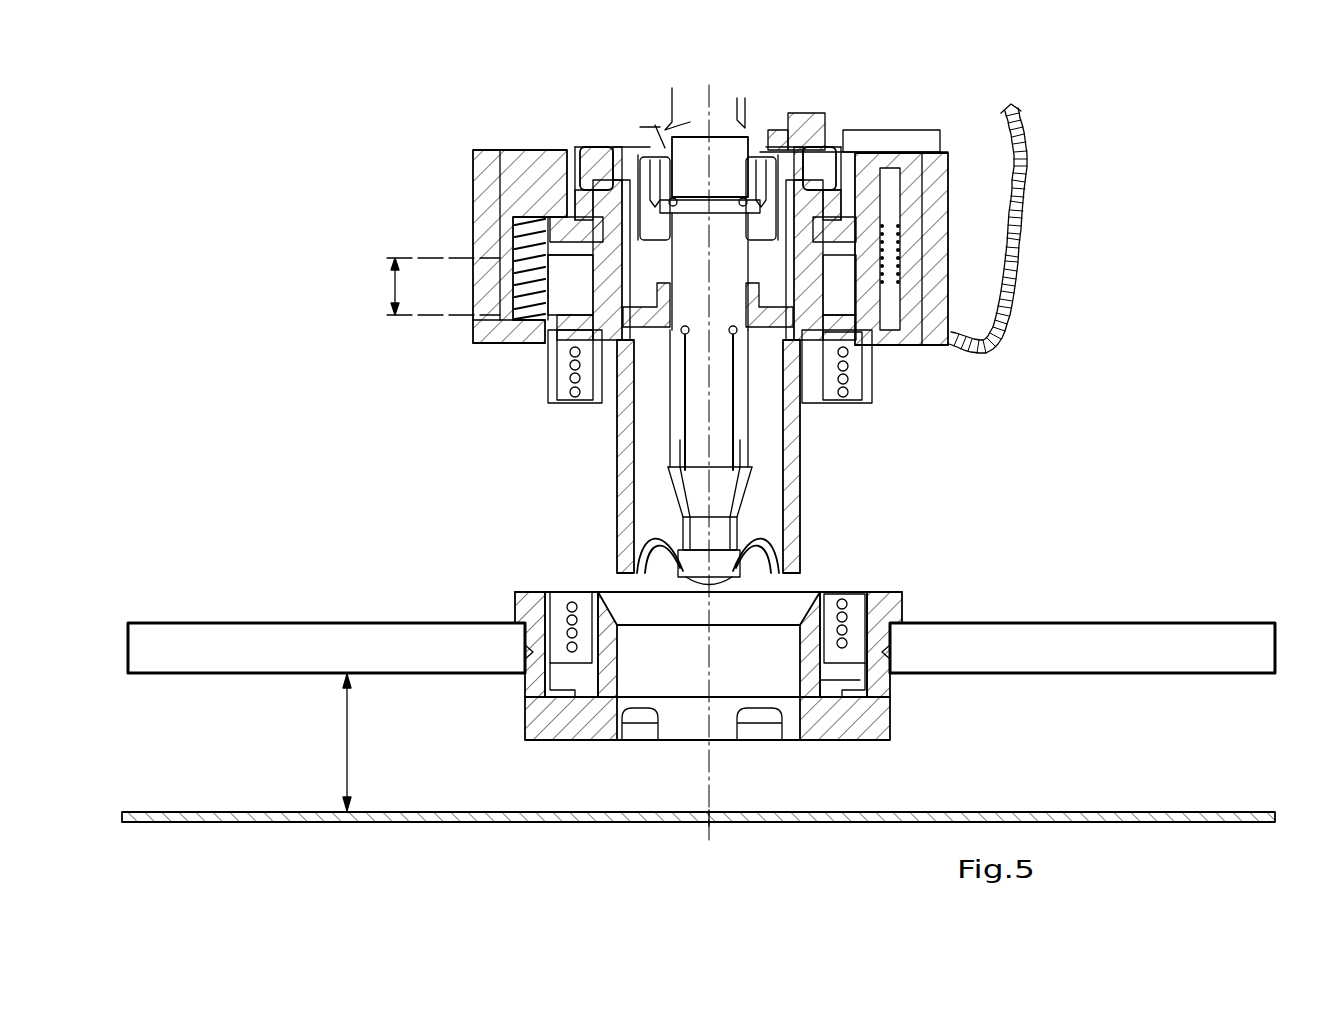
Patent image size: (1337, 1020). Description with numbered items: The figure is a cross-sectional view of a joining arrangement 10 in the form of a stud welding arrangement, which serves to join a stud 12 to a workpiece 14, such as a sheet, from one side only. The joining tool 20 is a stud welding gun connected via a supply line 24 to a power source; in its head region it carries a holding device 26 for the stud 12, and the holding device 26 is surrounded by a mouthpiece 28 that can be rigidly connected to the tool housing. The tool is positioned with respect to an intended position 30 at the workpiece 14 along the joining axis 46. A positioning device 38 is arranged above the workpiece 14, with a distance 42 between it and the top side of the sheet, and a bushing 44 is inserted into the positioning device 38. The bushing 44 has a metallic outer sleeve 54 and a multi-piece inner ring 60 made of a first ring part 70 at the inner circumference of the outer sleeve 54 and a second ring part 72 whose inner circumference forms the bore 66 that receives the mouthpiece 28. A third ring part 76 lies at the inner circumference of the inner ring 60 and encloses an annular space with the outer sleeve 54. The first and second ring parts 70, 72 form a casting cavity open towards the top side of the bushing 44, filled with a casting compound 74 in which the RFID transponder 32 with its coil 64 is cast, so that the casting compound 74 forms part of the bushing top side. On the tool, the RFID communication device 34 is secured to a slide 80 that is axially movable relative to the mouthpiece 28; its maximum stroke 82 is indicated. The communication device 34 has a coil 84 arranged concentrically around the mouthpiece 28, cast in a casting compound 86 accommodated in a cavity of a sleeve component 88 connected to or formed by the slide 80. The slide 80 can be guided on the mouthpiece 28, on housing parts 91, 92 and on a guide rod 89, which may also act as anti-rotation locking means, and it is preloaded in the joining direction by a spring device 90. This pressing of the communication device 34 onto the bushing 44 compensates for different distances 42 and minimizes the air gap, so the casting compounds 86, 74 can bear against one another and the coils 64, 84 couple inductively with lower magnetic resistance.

The joining arrangement 10 is at (1123, 190).
The joining tool 20 is at (1081, 337).
The stud 12 is at (704, 592).
The workpiece 14 is at (1100, 814).
The supply line 24 is at (1018, 205).
The holding device 26 is at (745, 500).
The mouthpiece 28 is at (790, 530).
The intended position 30 is at (722, 824).
The transponder 32 is at (834, 590).
The RFID communication device 34 is at (535, 392).
The positioning device 38 is at (1045, 618).
The distance 42 is at (347, 745).
The bushing 44 is at (510, 582).
The joining axis 46 is at (710, 120).
The outer sleeve 54 is at (540, 705).
The inner ring 60 is at (567, 587).
The coil 64 is at (865, 598).
The bore 66 is at (788, 655).
The first ring part 70 is at (578, 672).
The second ring part 72 is at (587, 687).
The casting compound 74 is at (847, 657).
The third ring part 76 is at (610, 672).
The slide 80 is at (492, 322).
The maximum stroke 82 is at (393, 287).
The coil 84 is at (574, 400).
The casting compound 86 is at (565, 346).
The sleeve component 88 is at (868, 367).
The guide rod 89 is at (895, 212).
The spring device 90 is at (535, 205).
The housing part 91 is at (505, 262).
The housing part 92 is at (472, 345).